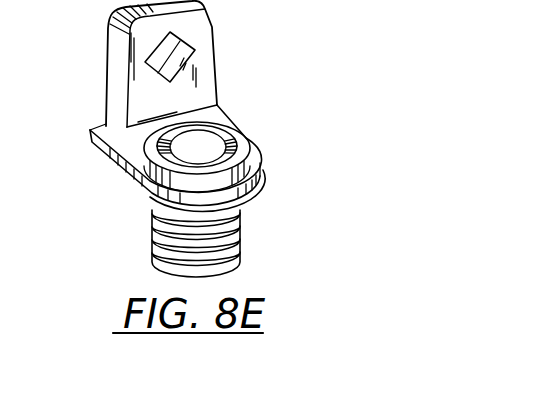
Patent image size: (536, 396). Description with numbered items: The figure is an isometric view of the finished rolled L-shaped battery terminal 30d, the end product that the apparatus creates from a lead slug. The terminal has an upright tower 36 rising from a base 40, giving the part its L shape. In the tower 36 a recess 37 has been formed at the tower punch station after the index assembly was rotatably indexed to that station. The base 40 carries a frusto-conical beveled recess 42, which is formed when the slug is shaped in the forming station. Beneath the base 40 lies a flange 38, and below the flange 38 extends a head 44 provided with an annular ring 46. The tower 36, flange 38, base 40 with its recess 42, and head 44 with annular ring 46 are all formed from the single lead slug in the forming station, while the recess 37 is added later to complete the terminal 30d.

The finished rolled L-shaped battery terminal 30d is at (351, 97).
The tower 36 is at (202, 23).
The recess 37 is at (167, 53).
The flange 38 is at (260, 192).
The base 40 is at (254, 163).
The frusto-conical beveled recess 42 is at (220, 130).
The head 44 is at (189, 243).
The annular ring 46 is at (242, 243).